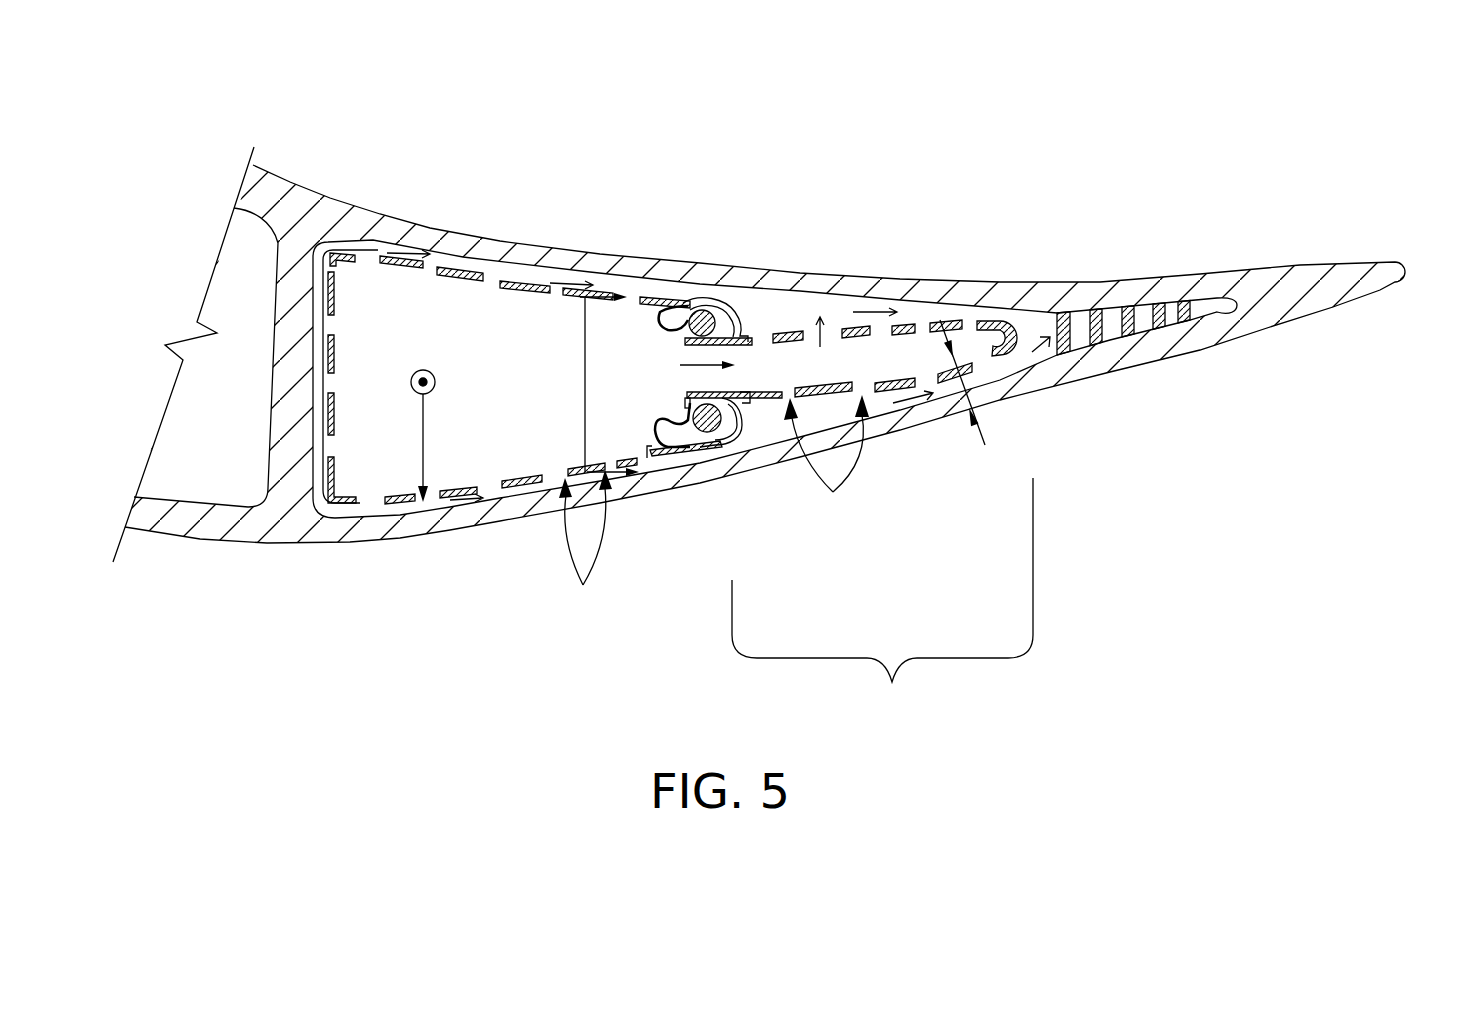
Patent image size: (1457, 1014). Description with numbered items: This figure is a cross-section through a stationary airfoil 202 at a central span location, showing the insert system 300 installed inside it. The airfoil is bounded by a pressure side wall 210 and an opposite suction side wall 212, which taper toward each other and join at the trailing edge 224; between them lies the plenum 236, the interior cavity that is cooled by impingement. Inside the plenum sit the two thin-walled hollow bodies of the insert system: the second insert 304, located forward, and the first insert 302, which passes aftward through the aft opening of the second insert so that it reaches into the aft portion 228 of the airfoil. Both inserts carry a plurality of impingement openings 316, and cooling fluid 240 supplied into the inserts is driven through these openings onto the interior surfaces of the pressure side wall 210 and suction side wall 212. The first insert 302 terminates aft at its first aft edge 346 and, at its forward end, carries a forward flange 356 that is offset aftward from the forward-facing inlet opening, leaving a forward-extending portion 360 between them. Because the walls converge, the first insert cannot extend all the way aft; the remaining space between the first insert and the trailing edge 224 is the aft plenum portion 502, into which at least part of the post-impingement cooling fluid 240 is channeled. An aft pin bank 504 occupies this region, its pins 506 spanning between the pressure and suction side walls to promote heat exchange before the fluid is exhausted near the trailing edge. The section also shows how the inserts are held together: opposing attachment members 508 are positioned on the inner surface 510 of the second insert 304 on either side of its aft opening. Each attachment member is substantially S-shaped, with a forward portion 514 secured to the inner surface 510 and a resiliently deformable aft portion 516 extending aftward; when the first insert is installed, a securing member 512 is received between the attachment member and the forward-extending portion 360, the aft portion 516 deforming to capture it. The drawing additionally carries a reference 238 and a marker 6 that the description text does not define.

The stationary airfoil 202 is at (1091, 128).
The pressure side wall 210 is at (1296, 264).
The suction side wall 212 is at (1170, 358).
The trailing edge 224 is at (1408, 270).
The aft portion 228 is at (892, 682).
The plenum 236 is at (929, 290).
The flow boundary 238 is at (995, 398).
The cooling fluid 240 is at (832, 327).
The insert system 300 is at (762, 182).
The first insert 302 is at (780, 333).
The second insert 304 is at (384, 250).
The impingement openings 316 is at (709, 506).
The first aft edge 346 is at (1038, 314).
The forward flange 356 is at (733, 310).
The forward-extending portion 360 is at (690, 393).
The aft plenum portion 502 is at (1228, 326).
The aft pin bank 504 is at (1183, 303).
The pins 506 is at (1127, 324).
The attachment members 508 is at (655, 299).
The inner surface 510 is at (492, 248).
The securing member 512 is at (690, 304).
The forward portion 514 is at (652, 452).
The aft portion 516 is at (692, 458).
The section line 6 is at (612, 385).